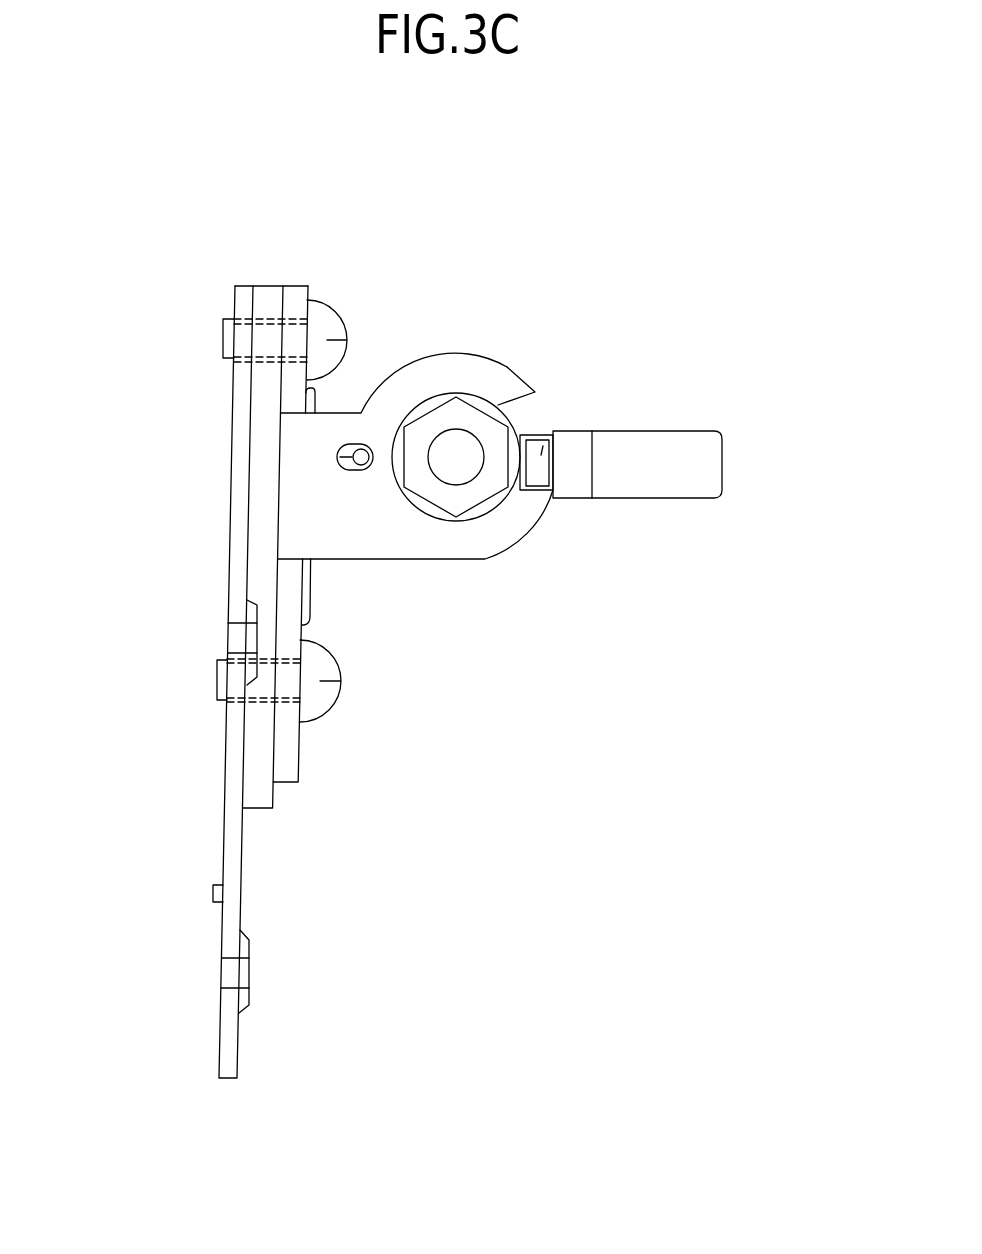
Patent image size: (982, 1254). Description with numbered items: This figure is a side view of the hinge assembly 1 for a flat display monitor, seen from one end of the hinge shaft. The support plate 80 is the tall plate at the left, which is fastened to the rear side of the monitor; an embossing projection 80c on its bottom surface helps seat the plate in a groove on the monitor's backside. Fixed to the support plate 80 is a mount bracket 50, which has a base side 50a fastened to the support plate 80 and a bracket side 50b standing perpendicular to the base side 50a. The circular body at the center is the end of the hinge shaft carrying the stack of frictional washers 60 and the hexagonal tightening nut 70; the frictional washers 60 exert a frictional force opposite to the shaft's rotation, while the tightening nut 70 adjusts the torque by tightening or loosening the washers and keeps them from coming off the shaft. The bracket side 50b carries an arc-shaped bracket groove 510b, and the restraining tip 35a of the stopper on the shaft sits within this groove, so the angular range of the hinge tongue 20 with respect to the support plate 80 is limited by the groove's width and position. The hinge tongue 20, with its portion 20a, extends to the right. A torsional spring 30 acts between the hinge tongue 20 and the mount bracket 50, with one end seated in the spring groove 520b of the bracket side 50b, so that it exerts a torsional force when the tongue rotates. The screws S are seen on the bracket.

The hinge assembly 1 is at (747, 212).
The hinge tongue 20 is at (742, 427).
The arm portion 20a is at (703, 467).
The torsional spring 30 is at (355, 472).
The restraining tip 35a is at (558, 424).
The mount bracket 50 is at (132, 477).
The base side 50a is at (292, 577).
The bracket side 50b is at (300, 478).
The frictional washer 60 is at (480, 400).
The tightening nut 70 is at (475, 493).
The support plate 80 is at (249, 1046).
The embossing projection 80c is at (213, 893).
The bracket groove 510b is at (527, 400).
The spring groove 520b is at (337, 457).
The screw S is at (322, 700).